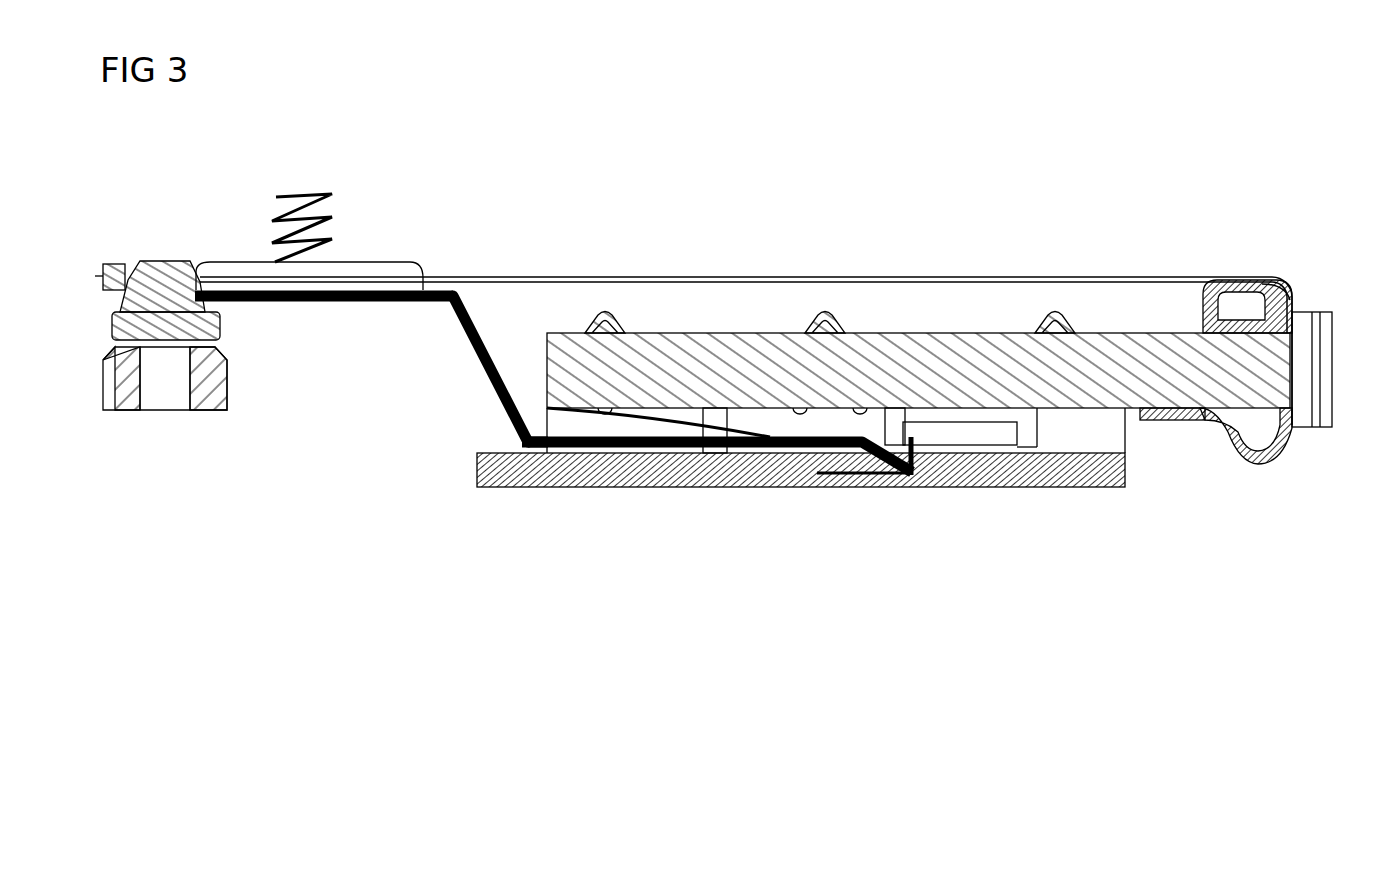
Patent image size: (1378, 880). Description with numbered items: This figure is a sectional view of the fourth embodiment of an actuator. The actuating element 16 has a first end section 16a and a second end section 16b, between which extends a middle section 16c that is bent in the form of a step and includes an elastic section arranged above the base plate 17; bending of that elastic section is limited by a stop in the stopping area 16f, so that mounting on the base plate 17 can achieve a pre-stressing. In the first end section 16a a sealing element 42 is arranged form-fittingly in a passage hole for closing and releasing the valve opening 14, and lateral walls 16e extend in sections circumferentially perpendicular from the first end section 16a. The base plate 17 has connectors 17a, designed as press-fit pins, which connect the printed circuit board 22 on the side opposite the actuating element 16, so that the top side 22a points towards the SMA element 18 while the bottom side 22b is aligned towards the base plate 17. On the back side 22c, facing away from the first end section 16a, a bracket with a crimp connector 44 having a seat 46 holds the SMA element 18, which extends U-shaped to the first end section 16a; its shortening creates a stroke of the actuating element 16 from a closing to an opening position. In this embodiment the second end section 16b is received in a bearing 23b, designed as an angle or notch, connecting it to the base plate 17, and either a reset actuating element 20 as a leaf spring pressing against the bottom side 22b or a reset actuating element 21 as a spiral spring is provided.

The valve opening 14 is at (168, 383).
The actuating element 16 is at (553, 378).
The first end section of the actuating element 16a is at (288, 305).
The second end section of the actuating element 16b is at (790, 448).
The middle section of the actuating element 16c is at (462, 343).
The lateral walls 16e is at (388, 262).
The stopping area of the actuating element 16f is at (522, 450).
The base plate 17 is at (597, 470).
The connectors 17a is at (1058, 313).
The SMA element 18 is at (718, 277).
The reset actuating element 20 is at (686, 418).
The reset actuating element 21 is at (305, 195).
The printed circuit board 22 is at (919, 364).
The top side of the printed circuit board 22a is at (1167, 333).
The bottom side of the printed circuit board 22b is at (1130, 410).
The back side of the printed circuit board 22c is at (1272, 372).
The bearing 23b is at (920, 467).
The sealing element 42 is at (167, 290).
The crimp connector 44 is at (1282, 288).
The seat 46 is at (1300, 312).